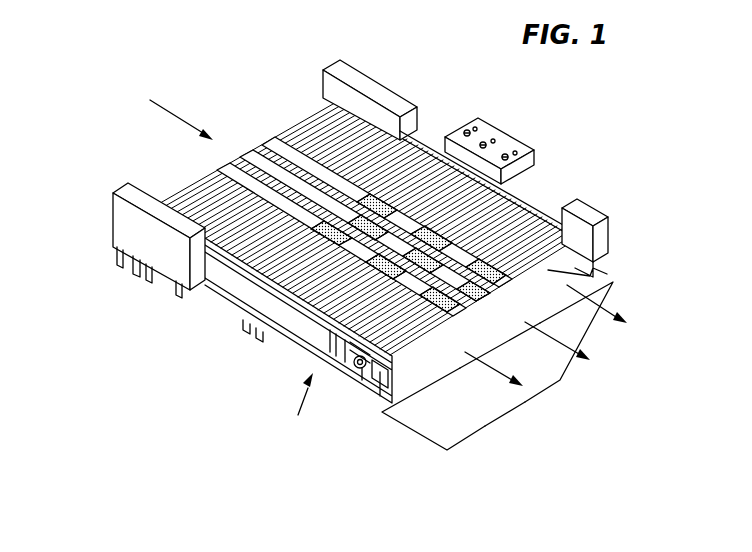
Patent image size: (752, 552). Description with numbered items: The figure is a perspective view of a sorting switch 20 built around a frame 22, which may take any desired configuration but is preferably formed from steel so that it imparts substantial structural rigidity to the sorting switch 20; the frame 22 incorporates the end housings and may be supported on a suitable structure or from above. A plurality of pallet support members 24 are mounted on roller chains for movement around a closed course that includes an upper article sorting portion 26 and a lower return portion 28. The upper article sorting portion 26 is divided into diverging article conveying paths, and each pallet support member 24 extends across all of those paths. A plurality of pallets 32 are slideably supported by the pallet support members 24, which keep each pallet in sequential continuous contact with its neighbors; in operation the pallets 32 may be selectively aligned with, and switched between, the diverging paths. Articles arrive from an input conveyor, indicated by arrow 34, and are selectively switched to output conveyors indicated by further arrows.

The sorting switch 20 is at (296, 76).
The frame 22 is at (227, 275).
The pallet support members 24 is at (373, 118).
The upper article sorting portion 26 is at (420, 127).
The lower return portion 28 is at (298, 406).
The pallets 32 is at (272, 173).
The arrow 34 is at (168, 98).